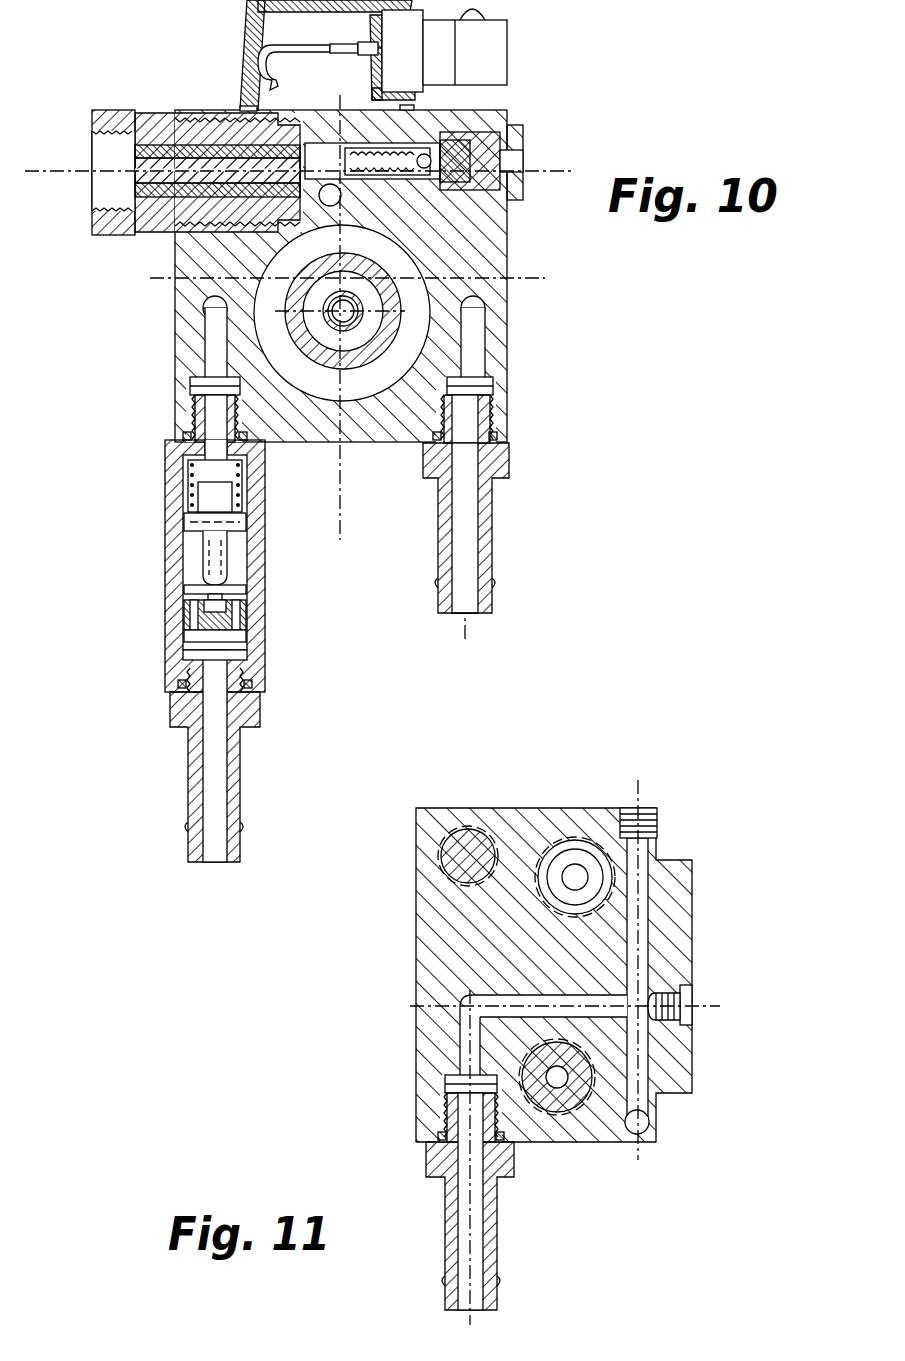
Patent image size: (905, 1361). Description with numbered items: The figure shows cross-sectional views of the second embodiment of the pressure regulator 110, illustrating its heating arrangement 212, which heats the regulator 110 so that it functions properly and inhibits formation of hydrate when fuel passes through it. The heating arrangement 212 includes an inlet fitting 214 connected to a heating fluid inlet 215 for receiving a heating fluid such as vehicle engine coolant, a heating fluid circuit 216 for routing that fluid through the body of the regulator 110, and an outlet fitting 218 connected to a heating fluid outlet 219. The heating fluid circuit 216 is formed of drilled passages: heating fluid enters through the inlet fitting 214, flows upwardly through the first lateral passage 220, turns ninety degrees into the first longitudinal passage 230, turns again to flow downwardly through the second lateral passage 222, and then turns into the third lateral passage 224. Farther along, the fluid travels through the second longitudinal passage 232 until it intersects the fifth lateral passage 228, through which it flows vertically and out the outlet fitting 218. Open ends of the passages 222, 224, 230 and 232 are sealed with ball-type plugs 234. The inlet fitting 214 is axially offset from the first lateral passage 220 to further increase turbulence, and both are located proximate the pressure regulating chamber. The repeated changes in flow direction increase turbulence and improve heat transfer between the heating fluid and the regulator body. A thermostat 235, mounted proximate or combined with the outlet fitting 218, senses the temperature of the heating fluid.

In FIG. 10, the pressure regulator 110 is at (578, 97).
In FIG. 11, the pressure regulator 110 is at (752, 903).
In FIG. 10, the heating arrangement 212 is at (472, 621).
In FIG. 10, the inlet fitting 214 is at (495, 555).
In FIG. 11, the inlet fitting 214 is at (500, 1220).
In FIG. 10, the heating fluid inlet 215 is at (488, 443).
In FIG. 10, the heating fluid circuit 216 is at (476, 393).
In FIG. 10, the outlet fitting 218 is at (170, 495).
In FIG. 10, the heating fluid outlet 219 is at (183, 441).
In FIG. 10, the first lateral passage 220 is at (487, 346).
In FIG. 11, the first lateral passage 220 is at (458, 1032).
In FIG. 11, the second lateral passage 222 is at (660, 1066).
In FIG. 11, the third lateral passage 224 is at (650, 1140).
In FIG. 10, the fifth lateral passage 228 is at (212, 345).
In FIG. 10, the first longitudinal passage 230 is at (484, 301).
In FIG. 11, the first longitudinal passage 230 is at (470, 985).
In FIG. 10, the second longitudinal passage 232 is at (203, 307).
In FIG. 11, the ball-type plug 234 is at (658, 820).
In FIG. 10, the thermostat 235 is at (190, 546).